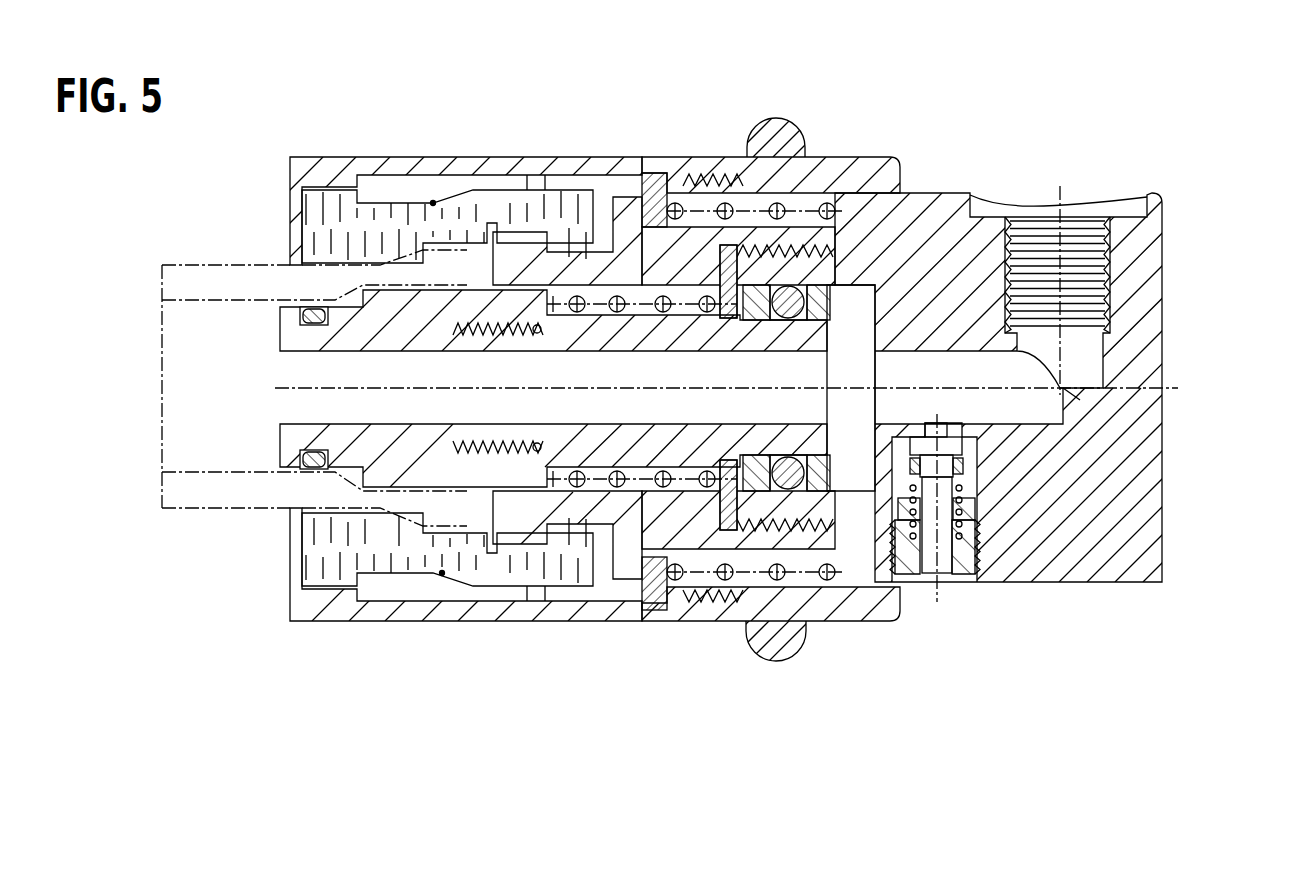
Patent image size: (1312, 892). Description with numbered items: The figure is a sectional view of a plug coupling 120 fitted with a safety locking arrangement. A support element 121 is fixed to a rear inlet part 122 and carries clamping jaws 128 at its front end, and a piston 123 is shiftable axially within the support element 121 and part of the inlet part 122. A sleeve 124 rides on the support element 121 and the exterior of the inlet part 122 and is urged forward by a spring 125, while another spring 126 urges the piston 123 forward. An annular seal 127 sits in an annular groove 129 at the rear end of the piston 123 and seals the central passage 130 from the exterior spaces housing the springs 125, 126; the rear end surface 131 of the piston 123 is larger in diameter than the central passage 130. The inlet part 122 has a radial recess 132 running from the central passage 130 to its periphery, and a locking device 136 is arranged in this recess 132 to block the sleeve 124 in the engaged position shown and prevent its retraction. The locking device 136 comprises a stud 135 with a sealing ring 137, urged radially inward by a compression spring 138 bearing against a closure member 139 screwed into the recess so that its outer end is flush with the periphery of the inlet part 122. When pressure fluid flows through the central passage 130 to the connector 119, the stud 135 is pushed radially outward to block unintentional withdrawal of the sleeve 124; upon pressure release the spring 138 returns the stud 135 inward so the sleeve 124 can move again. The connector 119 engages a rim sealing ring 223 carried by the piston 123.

The connector 119 is at (219, 490).
The plug coupling 120 is at (946, 156).
The support element 121 is at (620, 200).
The inlet part 122 is at (976, 240).
The piston 123 is at (675, 447).
The sleeve 124 is at (679, 157).
The spring 125 is at (800, 193).
The spring 126 is at (647, 480).
The annular seal 127 is at (800, 522).
The clamping jaws 128 is at (497, 195).
The annular groove 129 is at (765, 527).
The central passage 130 is at (520, 402).
The rear end surface 131 is at (845, 445).
The radial recess 132 is at (975, 500).
The stud 135 is at (955, 583).
The locking device 136 is at (937, 596).
The sealing ring 137 is at (968, 462).
The compression spring 138 is at (985, 548).
The closure member 139 is at (975, 540).
The rim sealing ring 223 is at (303, 307).